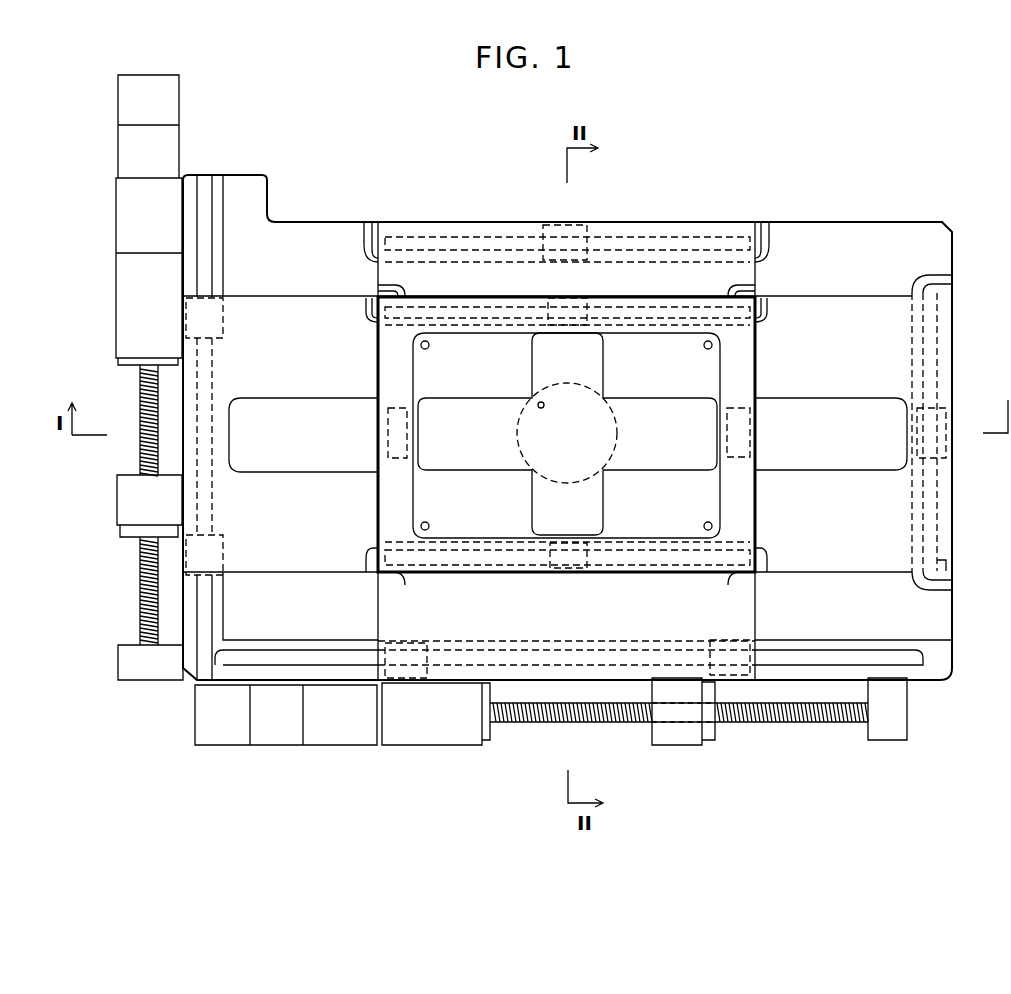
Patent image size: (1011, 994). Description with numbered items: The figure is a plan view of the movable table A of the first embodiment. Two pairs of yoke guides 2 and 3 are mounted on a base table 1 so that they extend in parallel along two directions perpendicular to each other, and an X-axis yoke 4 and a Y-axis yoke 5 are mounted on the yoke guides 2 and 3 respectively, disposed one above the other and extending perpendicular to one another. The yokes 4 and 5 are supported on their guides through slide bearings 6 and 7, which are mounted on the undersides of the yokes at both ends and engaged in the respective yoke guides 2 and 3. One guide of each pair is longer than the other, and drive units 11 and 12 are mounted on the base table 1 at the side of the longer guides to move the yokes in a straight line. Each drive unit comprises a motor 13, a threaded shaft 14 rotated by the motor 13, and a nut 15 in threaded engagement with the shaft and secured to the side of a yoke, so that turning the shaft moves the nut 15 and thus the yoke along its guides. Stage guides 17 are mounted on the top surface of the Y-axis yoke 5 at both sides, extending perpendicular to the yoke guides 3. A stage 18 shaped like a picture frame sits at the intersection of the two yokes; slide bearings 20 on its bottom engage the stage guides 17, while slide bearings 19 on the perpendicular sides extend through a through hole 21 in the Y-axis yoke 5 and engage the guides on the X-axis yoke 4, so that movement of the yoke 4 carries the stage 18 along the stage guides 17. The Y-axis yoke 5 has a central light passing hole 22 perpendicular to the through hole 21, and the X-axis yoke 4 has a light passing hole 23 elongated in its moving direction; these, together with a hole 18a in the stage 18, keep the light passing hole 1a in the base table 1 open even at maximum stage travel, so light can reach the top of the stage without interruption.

The movable table A is at (899, 213).
The base table 1 is at (314, 232).
The light passing hole 1a is at (612, 442).
The yoke guides 2 is at (676, 240).
The yoke guides 3 is at (208, 200).
The X-axis yoke 4 is at (448, 625).
The Y-axis yoke 5 is at (885, 527).
The slide bearings 6 is at (560, 225).
The slide bearings 7 is at (188, 325).
The drive unit 11 is at (528, 734).
The drive unit 12 is at (131, 453).
The motor 13 is at (128, 222).
The threaded shaft 14 is at (140, 400).
The nut 15 is at (124, 510).
The stage guides 17 is at (445, 305).
The stage 18 is at (745, 375).
The hole 18a is at (718, 352).
The slide bearings 19 is at (380, 475).
The slide bearings 20 is at (578, 298).
The through hole 21 is at (290, 406).
The light passing hole 22 is at (600, 362).
The light passing hole 23 is at (540, 405).